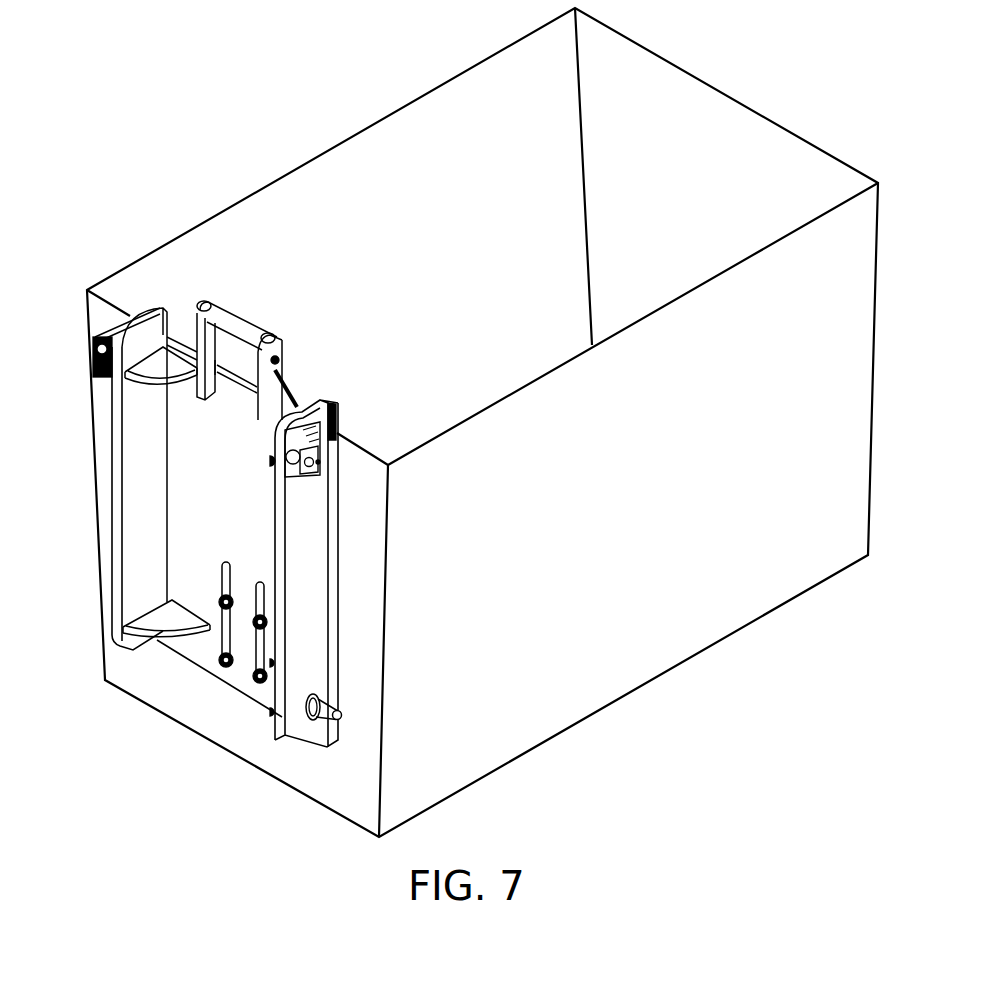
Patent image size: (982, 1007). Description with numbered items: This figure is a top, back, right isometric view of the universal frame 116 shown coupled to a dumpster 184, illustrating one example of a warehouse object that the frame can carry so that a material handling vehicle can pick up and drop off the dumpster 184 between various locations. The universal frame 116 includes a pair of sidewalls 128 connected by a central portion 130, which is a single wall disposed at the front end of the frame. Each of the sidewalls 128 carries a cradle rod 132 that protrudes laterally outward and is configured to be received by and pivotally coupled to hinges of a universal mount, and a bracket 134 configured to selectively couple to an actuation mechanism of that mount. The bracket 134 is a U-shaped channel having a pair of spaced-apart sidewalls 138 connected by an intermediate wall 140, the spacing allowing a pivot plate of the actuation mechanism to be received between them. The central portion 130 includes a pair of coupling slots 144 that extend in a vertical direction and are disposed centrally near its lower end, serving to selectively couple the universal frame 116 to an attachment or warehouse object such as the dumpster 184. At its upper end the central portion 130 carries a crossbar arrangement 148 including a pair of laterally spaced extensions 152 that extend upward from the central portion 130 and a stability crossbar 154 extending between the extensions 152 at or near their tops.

The universal frame 116 is at (108, 537).
The sidewalls 128 is at (137, 448).
The central portion 130 is at (188, 483).
The cradle rod 132 is at (340, 718).
The bracket 134 is at (91, 339).
The spaced-apart sidewalls 138 is at (108, 357).
The intermediate wall 140 is at (110, 330).
The coupling slots 144 is at (263, 587).
The crossbar arrangement 148 is at (285, 357).
The extensions 152 is at (212, 303).
The stability crossbar 154 is at (237, 302).
The dumpster 184 is at (653, 570).